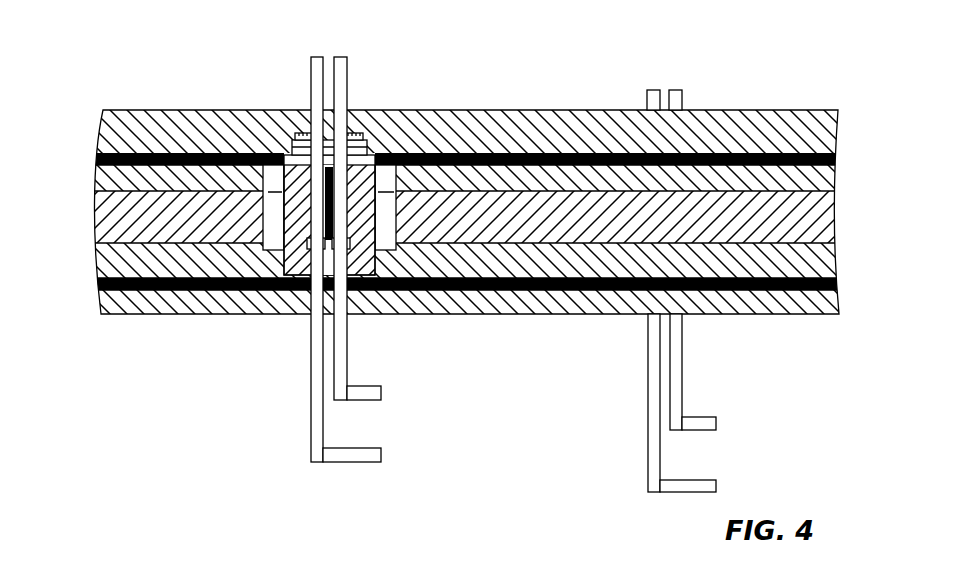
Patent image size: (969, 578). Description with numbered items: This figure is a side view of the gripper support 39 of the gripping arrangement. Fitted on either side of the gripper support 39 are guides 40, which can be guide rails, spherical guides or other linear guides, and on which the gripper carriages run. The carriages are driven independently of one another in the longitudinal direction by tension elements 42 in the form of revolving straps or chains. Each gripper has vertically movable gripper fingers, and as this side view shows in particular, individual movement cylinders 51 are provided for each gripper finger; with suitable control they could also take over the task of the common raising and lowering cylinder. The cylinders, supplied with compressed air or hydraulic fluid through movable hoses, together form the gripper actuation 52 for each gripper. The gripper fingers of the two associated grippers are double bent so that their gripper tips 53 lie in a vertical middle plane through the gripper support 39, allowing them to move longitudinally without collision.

The gripper support 39 is at (548, 125).
The guides 40 is at (835, 217).
The tension elements 42 is at (838, 155).
The individual movement cylinders 51 is at (341, 179).
The gripper actuation 52 is at (278, 77).
The gripper tips 53 is at (365, 390).